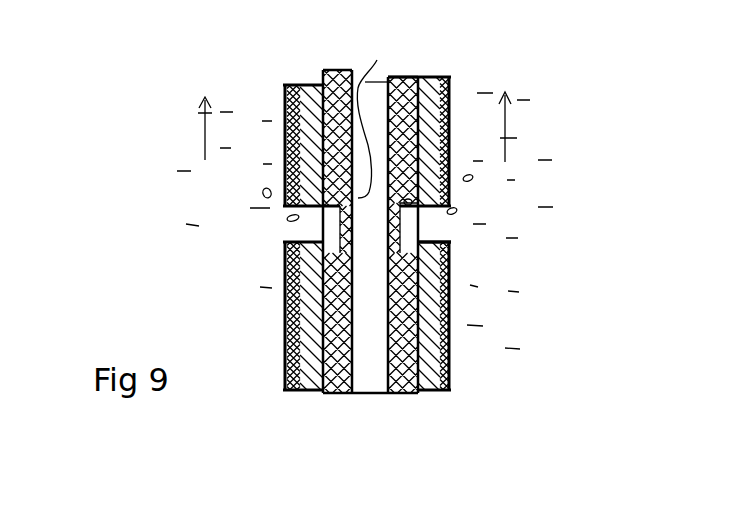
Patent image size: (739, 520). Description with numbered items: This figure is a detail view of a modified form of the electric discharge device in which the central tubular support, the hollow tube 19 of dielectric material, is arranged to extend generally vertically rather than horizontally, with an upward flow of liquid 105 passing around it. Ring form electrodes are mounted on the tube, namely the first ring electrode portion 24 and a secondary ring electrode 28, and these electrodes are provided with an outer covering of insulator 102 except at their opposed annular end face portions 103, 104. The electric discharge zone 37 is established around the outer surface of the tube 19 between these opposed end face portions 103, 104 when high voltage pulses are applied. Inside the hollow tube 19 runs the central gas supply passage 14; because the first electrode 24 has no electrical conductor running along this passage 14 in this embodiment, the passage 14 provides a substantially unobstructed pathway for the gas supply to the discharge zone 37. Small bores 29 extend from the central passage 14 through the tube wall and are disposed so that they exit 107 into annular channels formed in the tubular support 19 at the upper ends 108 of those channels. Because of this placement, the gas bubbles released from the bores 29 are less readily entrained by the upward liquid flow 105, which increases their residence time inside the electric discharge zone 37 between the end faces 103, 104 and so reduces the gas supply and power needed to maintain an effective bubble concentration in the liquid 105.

The central passage 14 is at (372, 380).
The hollow tube 19 is at (405, 397).
The first ring electrode portion 24 is at (313, 393).
The secondary ring electrode 28 is at (425, 88).
The small bore 29 is at (377, 60).
The electric discharge zone 37 is at (420, 230).
The insulator 102 is at (292, 85).
The end face portion 103 is at (452, 243).
The end face portion 104 is at (457, 210).
The upward flow of liquid 105 is at (195, 135).
The exit 107 is at (322, 208).
The upper end 108 is at (287, 180).